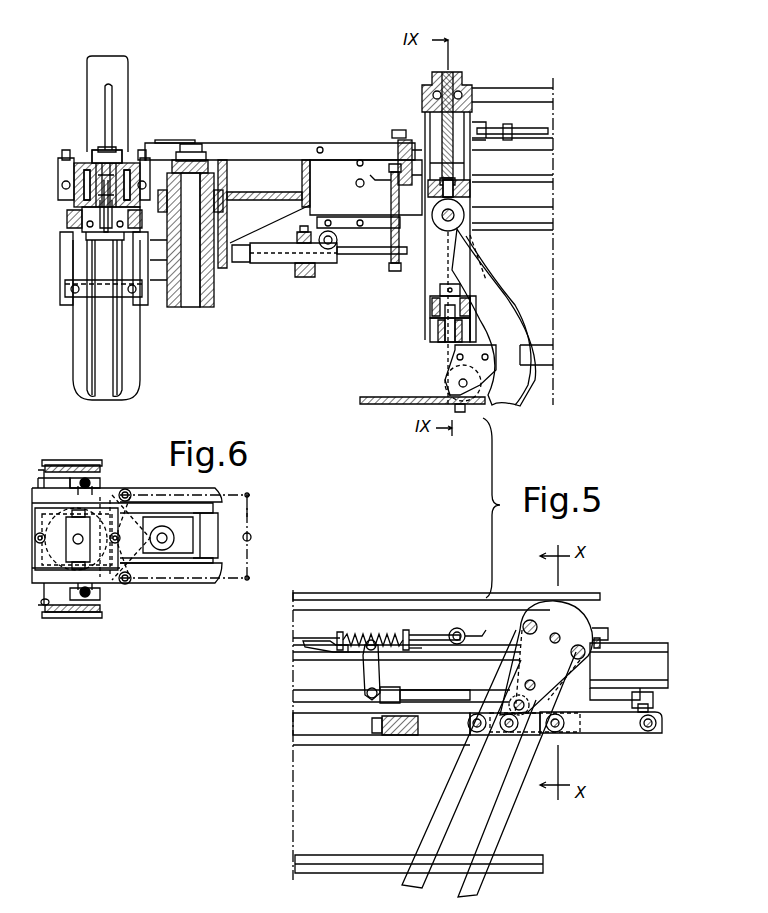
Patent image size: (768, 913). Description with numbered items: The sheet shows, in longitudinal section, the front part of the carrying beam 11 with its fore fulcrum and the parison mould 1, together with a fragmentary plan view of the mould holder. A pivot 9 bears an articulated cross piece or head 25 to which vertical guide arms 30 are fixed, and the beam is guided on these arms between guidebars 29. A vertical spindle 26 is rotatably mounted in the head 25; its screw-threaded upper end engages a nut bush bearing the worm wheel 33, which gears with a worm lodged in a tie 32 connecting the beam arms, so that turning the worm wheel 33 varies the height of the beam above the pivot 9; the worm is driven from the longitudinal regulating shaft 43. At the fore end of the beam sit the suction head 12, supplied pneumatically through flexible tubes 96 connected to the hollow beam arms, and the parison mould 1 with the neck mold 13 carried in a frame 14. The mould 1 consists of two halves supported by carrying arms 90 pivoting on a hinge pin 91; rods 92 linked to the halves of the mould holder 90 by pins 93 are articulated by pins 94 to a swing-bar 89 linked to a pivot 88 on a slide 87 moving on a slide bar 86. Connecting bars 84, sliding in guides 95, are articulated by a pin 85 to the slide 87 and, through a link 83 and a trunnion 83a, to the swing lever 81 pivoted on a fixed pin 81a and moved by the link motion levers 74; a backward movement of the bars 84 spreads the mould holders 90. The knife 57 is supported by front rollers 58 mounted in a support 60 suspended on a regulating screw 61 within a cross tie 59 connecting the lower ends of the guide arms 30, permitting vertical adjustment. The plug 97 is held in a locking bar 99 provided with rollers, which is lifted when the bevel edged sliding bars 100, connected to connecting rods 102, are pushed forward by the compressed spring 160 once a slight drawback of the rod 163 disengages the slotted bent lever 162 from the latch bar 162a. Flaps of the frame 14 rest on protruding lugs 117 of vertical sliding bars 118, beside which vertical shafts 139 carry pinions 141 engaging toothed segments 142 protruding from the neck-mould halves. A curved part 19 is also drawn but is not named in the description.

In FIG. 5, the parison mould 1 is at (78, 341).
In FIG. 5, the pivot 9 is at (442, 222).
In FIG. 5, the carrying beam 11 is at (62, 166).
In FIG. 6, the carrying beam 11 is at (36, 502).
In FIG. 5, the suction head 12 is at (80, 160).
In FIG. 6, the suction head 12 is at (40, 520).
In FIG. 5, the neck mold 13 is at (70, 218).
In FIG. 5, the frame 14 is at (132, 213).
In FIG. 6, the frame 14 is at (36, 482).
In FIG. 5, the curved arm 19 is at (498, 270).
In FIG. 5, the articulated cross piece or head 25 is at (498, 192).
In FIG. 5, the vertical spindle 26 is at (458, 122).
In FIG. 5, the guidebars 29 is at (470, 170).
In FIG. 5, the vertical guide arm 30 is at (432, 272).
In FIG. 5, the tie 32 is at (422, 93).
In FIG. 5, the worm wheel 33 is at (474, 100).
In FIG. 5, the longitudinal regulating shaft 43 is at (333, 604).
In FIG. 5, the knife 57 is at (392, 400).
In FIG. 5, the front rollers 58 is at (450, 374).
In FIG. 5, the cross tie 59 is at (432, 302).
In FIG. 5, the support 60 is at (440, 332).
In FIG. 5, the regulating screw 61 is at (470, 318).
In FIG. 5, the link motion levers 74 is at (500, 805).
In FIG. 5, the swing lever 81 is at (585, 622).
In FIG. 5, the pin 81a is at (560, 630).
In FIG. 5, the link 83 is at (500, 740).
In FIG. 5, the trunnion 83a is at (486, 768).
In FIG. 5, the connecting bars 84 is at (548, 219).
In FIG. 5, the pin 85 is at (328, 265).
In FIG. 5, the slide bar 86 is at (362, 256).
In FIG. 5, the slide 87 is at (258, 276).
In FIG. 5, the pivot 88 is at (303, 277).
In FIG. 6, the pivot 88 is at (251, 538).
In FIG. 5, the swing-bar 89 is at (292, 280).
In FIG. 6, the swing-bar 89 is at (249, 512).
In FIG. 5, the carrying arms 90 is at (62, 300).
In FIG. 6, the carrying arms 90 is at (124, 537).
In FIG. 5, the hinge pin 91 is at (186, 302).
In FIG. 6, the hinge pin 91 is at (173, 538).
In FIG. 6, the rods 92 is at (172, 495).
In FIG. 6, the pins 93 is at (132, 495).
In FIG. 6, the pins 94 is at (249, 495).
In FIG. 5, the guides 95 is at (572, 735).
In FIG. 5, the flexible tubes 96 is at (628, 712).
In FIG. 5, the plug 97 is at (98, 234).
In FIG. 5, the locking bar 99 is at (86, 160).
In FIG. 6, the locking bar 99 is at (62, 546).
In FIG. 5, the sliding bars 100 is at (242, 158).
In FIG. 5, the connecting rods 102 is at (522, 138).
In FIG. 6, the protruding lugs 117 is at (42, 470).
In FIG. 5, the vertical sliding bars 118 is at (118, 96).
In FIG. 6, the vertical sliding bars 118 is at (100, 466).
In FIG. 5, the vertical shafts 139 is at (112, 108).
In FIG. 6, the vertical shafts 139 is at (95, 478).
In FIG. 6, the pinions 141 is at (95, 484).
In FIG. 6, the toothed segments 142 is at (70, 464).
In FIG. 5, the spring 160 is at (376, 640).
In FIG. 5, the slotted bent lever 162 is at (348, 655).
In FIG. 5, the latch bar 162a is at (322, 631).
In FIG. 5, the rod 163 is at (456, 675).